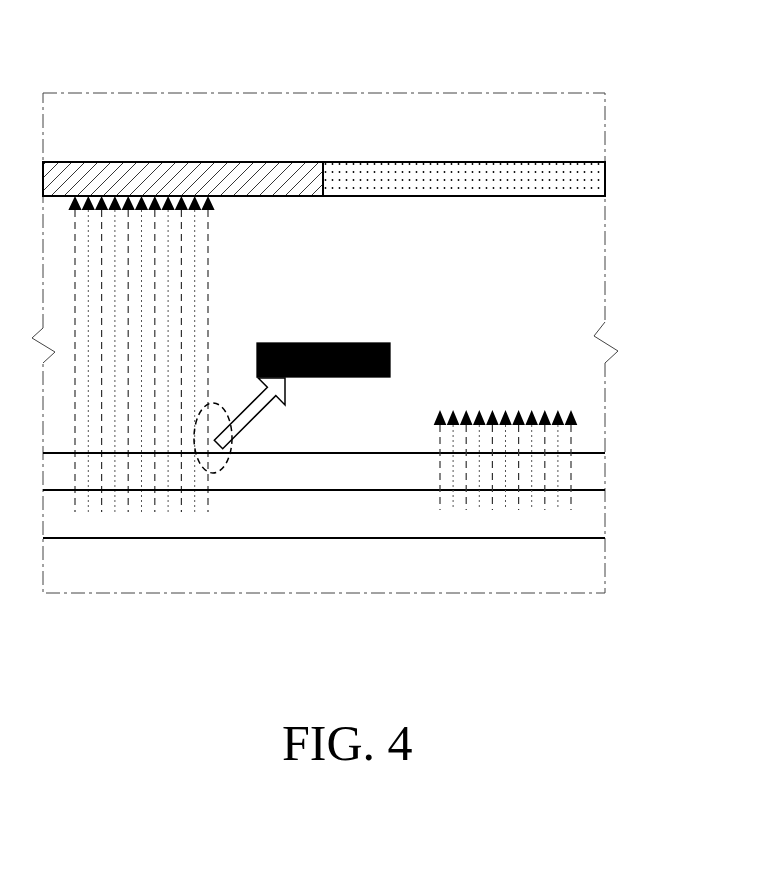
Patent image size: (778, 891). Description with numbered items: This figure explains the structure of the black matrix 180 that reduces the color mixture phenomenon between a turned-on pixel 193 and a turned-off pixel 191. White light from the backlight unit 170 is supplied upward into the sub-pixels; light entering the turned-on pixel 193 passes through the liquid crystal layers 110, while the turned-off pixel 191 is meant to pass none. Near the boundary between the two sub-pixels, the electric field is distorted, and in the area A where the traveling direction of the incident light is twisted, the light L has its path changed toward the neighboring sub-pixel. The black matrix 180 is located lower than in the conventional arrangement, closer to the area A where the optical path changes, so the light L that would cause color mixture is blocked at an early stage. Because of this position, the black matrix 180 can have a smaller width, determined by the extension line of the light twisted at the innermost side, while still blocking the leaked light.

The turned-on pixel 193 is at (153, 173).
The turned-off pixel 191 is at (538, 172).
The black matrix 180 is at (390, 360).
The display panel / optical layer 110 is at (583, 481).
The backlight unit 170 is at (565, 567).
The area where the traveling direction of incident light is twisted A is at (227, 455).
The light whose path is changed L is at (265, 407).